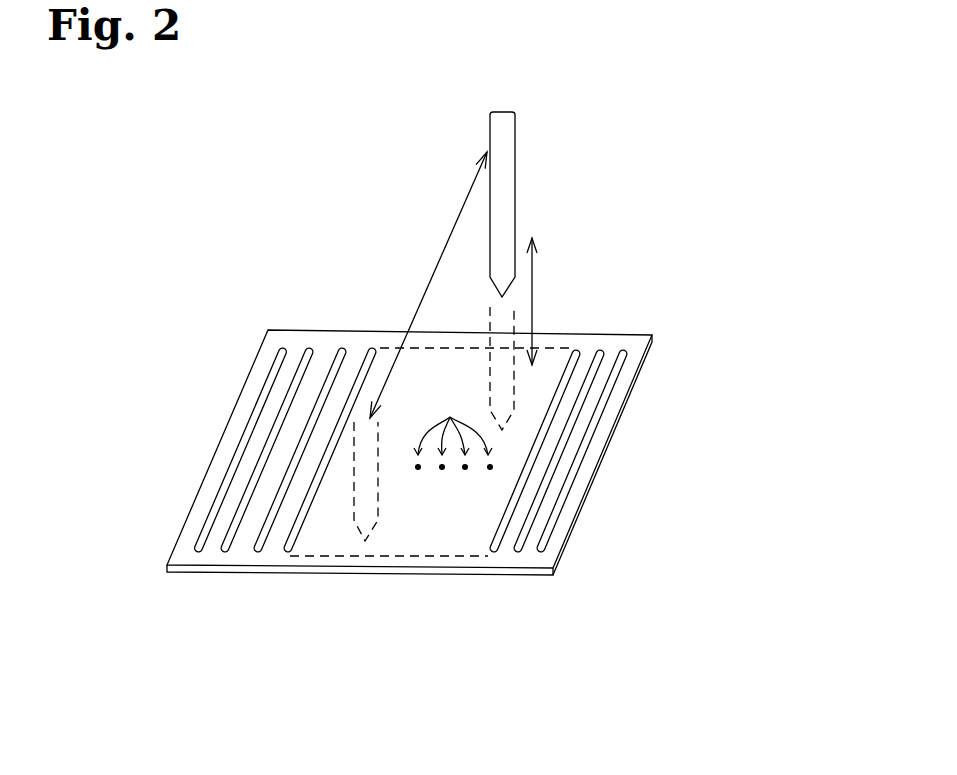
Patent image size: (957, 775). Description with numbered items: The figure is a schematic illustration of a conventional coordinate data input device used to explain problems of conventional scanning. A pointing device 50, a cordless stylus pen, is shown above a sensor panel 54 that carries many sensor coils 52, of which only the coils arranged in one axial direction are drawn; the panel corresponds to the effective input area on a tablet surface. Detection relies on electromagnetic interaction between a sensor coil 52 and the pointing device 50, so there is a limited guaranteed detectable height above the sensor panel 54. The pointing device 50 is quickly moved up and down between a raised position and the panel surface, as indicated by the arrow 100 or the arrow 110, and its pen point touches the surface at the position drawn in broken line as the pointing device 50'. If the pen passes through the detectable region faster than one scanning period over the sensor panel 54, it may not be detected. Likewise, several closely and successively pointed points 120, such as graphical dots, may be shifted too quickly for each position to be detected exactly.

The pointing device 50 is at (535, 204).
The pointing device in contact position 50' is at (434, 424).
The sensor coil 52 is at (257, 466).
The sensor panel 54 is at (420, 535).
The arrow indicating up-and-down movement 100 is at (534, 284).
The arrow indicating pointing device movement 110 is at (430, 280).
The points 120 is at (453, 429).